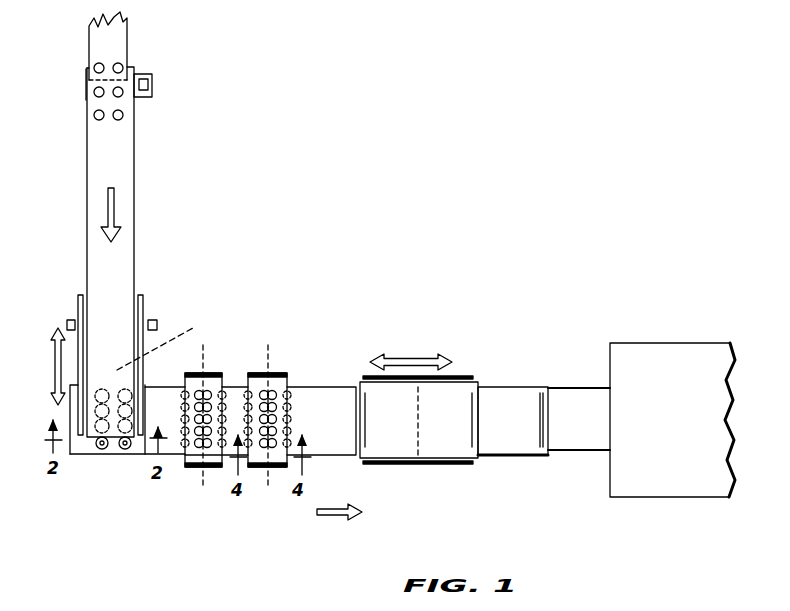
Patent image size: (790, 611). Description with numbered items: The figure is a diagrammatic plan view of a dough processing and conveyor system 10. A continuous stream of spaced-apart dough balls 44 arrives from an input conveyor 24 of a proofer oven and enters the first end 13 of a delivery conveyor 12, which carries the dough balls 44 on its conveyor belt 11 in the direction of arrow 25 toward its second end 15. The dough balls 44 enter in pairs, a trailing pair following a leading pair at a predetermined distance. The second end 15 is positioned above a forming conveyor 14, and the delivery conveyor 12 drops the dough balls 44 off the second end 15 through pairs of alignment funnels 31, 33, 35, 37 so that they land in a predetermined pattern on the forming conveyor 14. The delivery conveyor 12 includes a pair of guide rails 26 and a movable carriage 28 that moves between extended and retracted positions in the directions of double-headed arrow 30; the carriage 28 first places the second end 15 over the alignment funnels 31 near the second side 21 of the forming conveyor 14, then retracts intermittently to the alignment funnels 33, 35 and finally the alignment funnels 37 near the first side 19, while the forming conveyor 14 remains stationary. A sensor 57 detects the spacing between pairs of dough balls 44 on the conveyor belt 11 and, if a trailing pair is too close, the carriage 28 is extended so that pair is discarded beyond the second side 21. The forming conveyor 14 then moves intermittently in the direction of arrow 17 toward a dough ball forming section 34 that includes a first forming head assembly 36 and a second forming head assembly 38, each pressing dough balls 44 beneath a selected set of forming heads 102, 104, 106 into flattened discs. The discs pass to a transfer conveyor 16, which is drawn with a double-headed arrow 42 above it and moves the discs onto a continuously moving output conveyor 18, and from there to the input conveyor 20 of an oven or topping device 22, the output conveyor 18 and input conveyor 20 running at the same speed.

The dough processing and conveyor system 10 is at (402, 227).
The conveyor belt 11 is at (115, 277).
The delivery conveyor 12 is at (145, 196).
The first end 13 is at (73, 80).
The forming conveyor 14 is at (317, 403).
The second end 15 is at (82, 443).
The transfer conveyor 16 is at (442, 403).
The arrow 17 is at (333, 512).
The output conveyor 18 is at (508, 400).
The first side 19 is at (150, 386).
The input conveyor 20 is at (572, 407).
The second side 21 is at (135, 455).
The oven or topping device 22 is at (668, 387).
The input conveyor 24 is at (112, 48).
The arrow 25 is at (112, 210).
The guide rails 26 is at (80, 296).
The movable carriage 28 is at (165, 338).
The double-headed arrow 30 is at (53, 352).
The alignment funnels 31 is at (125, 449).
The alignment funnels 33 is at (143, 415).
The dough ball forming section 34 is at (257, 399).
The alignment funnels 35 is at (82, 412).
The first forming head assembly 36 is at (257, 415).
The alignment funnels 37 is at (143, 397).
The second forming head assembly 38 is at (272, 454).
The reciprocating motion of transfer unit 42 is at (412, 353).
The dough balls 44 is at (95, 93).
The sensor 57 is at (70, 320).
The forming heads 102 is at (207, 400).
The forming heads 104 is at (185, 373).
The forming heads 106 is at (223, 385).